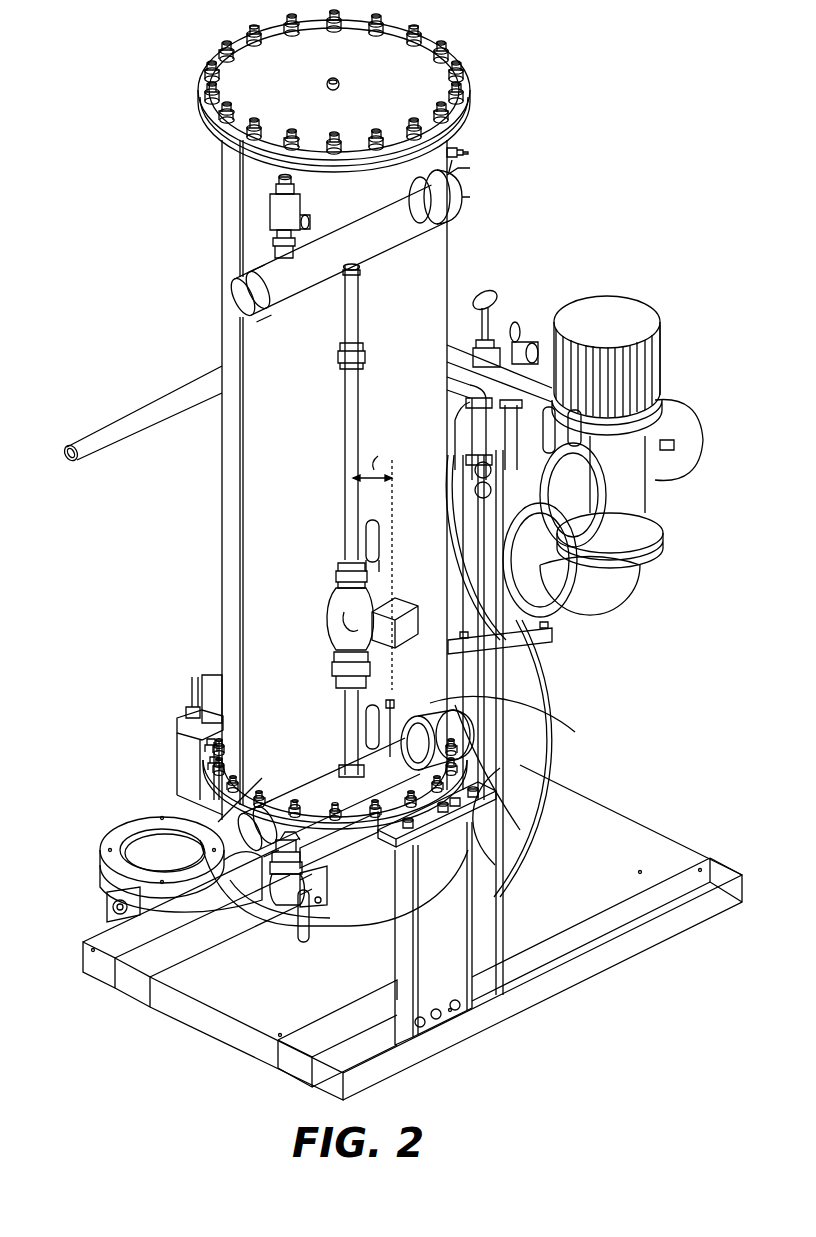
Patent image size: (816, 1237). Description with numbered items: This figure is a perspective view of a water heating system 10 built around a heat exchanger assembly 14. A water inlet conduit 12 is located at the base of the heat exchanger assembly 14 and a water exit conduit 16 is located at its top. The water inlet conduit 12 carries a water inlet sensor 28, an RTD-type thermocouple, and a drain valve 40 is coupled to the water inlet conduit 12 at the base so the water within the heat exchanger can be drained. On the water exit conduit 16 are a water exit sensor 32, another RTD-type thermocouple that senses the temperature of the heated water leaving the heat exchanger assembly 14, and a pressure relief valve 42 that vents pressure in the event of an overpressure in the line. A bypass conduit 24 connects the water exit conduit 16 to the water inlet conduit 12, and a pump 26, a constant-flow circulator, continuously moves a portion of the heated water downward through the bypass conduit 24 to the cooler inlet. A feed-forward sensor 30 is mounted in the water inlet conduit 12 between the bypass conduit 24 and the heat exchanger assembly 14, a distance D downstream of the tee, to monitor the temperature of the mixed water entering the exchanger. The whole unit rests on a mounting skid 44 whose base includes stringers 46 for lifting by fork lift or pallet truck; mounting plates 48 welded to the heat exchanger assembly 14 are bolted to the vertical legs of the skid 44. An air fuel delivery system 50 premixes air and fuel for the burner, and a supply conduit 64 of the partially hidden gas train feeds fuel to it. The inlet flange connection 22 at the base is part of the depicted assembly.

The water heating system 10 is at (198, 46).
The water inlet conduit 12 is at (268, 926).
The heat exchanger assembly 14 is at (258, 333).
The water exit conduit 16 is at (256, 274).
The inlet flange connection 22 is at (178, 813).
The bypass conduit 24 is at (348, 440).
The pump 26 is at (340, 622).
The water inlet sensor 28 is at (318, 906).
The feed-forward sensor 30 is at (515, 731).
The water exit sensor 32 is at (456, 170).
The drain valve 40 is at (292, 908).
The pressure relief valve 42 is at (280, 186).
The mounting skid 44 is at (578, 906).
The stringers 46 is at (370, 1012).
The mounting plates 48 is at (553, 790).
The air fuel delivery system 50 is at (713, 262).
The supply conduit 64 is at (88, 440).